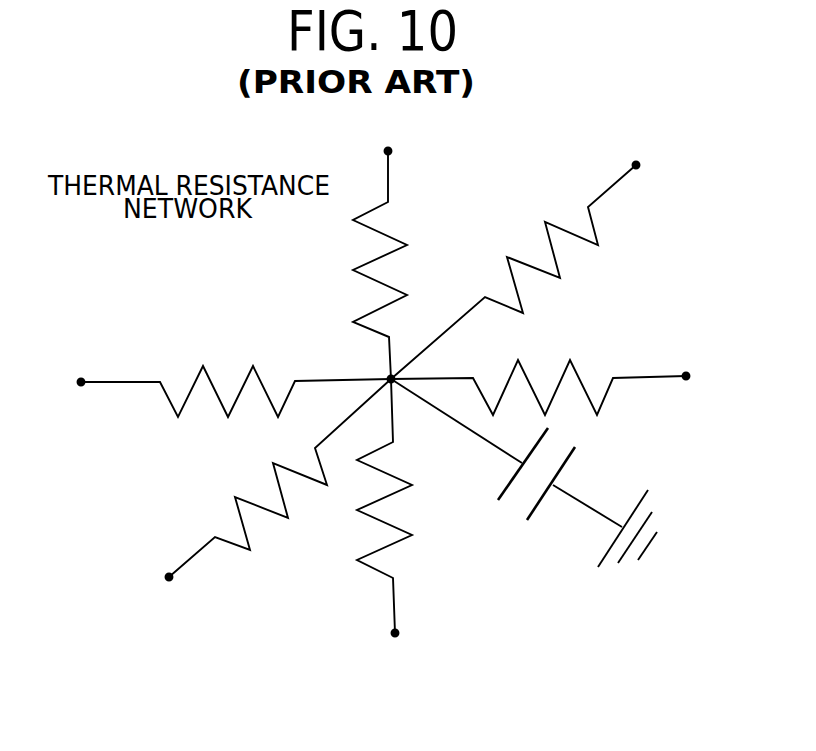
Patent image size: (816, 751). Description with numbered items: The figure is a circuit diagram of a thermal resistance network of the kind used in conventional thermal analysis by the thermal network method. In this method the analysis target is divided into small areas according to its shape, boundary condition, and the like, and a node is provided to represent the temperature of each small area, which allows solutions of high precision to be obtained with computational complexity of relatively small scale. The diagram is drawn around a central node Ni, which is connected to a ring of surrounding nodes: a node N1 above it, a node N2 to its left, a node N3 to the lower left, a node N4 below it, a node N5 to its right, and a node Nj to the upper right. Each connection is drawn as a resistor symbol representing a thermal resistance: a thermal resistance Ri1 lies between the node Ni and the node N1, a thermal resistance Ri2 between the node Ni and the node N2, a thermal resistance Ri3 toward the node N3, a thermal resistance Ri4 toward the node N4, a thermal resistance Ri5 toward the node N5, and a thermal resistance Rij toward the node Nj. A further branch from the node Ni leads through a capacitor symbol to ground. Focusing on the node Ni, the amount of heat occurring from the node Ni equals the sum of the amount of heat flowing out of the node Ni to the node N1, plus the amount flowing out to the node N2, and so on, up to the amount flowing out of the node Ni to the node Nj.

The node Ni is at (371, 366).
The node N1 is at (372, 155).
The node N2 is at (83, 398).
The thermal node 3 N3 is at (156, 592).
The thermal node 4 N4 is at (395, 651).
The thermal node 5 N5 is at (687, 393).
The node Nj is at (649, 179).
The thermal resistance between node i and node 1 Ri1 is at (358, 265).
The thermal resistance between node i and node 2 Ri2 is at (236, 379).
The thermal resistance between node i and node 3 Ri3 is at (280, 478).
The thermal resistance between node i and node 4 Ri4 is at (403, 506).
The thermal resistance between node i and node 5 Ri5 is at (538, 375).
The thermal resistance between node i and node j Rij is at (513, 272).